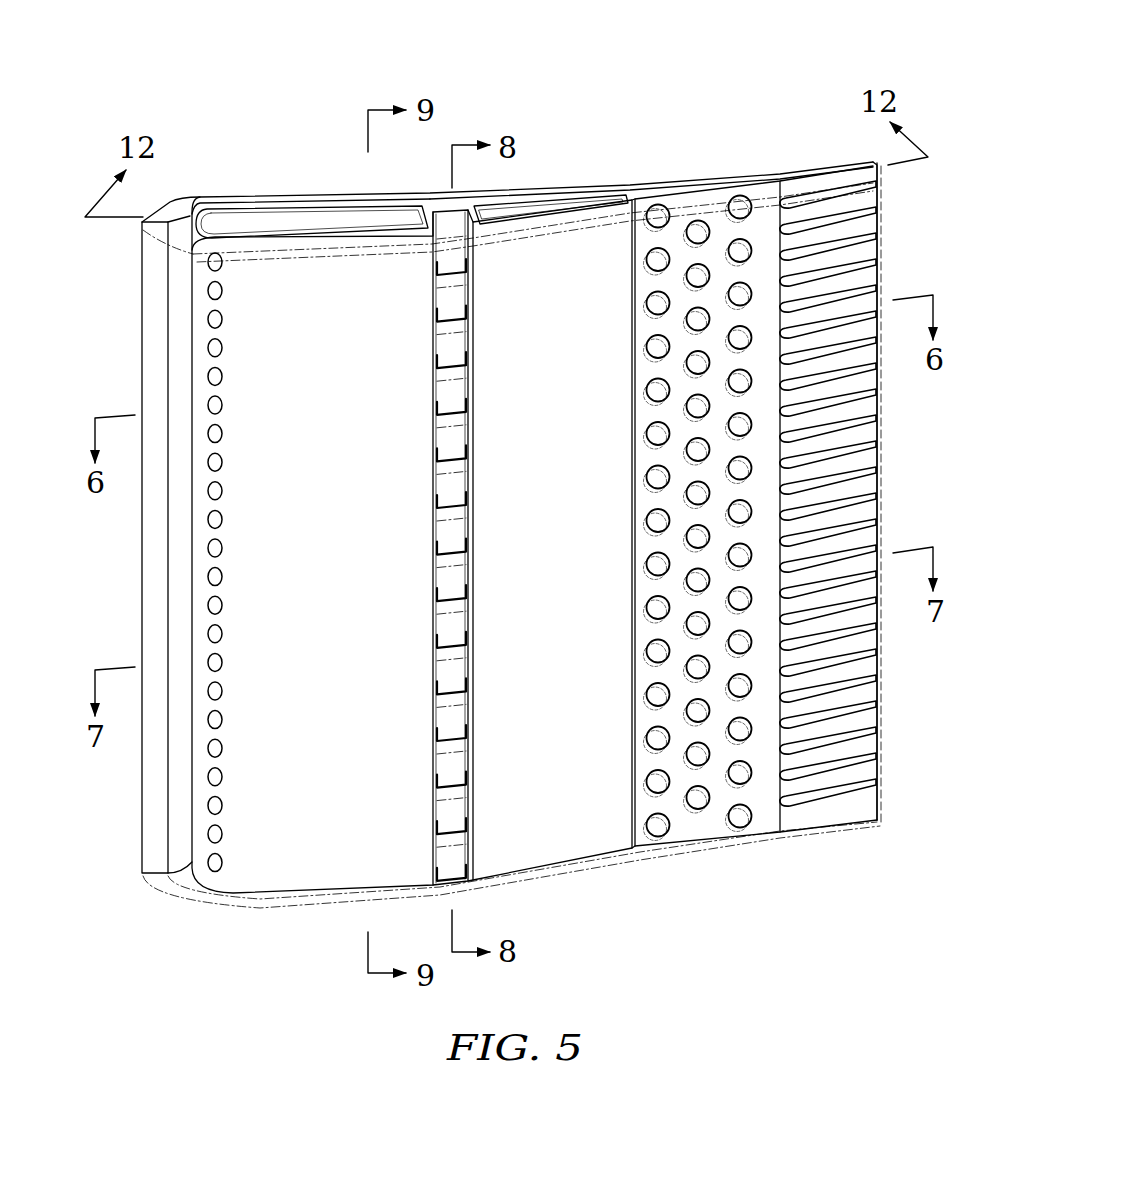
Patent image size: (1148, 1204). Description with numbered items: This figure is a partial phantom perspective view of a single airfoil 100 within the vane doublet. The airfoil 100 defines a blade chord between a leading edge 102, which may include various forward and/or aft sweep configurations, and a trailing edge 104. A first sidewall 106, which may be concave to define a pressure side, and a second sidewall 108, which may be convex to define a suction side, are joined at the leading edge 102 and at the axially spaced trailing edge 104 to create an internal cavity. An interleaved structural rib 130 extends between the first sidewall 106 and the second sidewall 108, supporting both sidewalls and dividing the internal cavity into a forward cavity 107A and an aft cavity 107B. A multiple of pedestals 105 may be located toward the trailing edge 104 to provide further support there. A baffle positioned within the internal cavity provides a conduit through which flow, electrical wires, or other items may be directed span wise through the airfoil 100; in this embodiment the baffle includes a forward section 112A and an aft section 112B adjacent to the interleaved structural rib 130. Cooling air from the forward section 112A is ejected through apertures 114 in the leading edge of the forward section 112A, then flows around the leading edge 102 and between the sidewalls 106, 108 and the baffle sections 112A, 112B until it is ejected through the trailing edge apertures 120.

The airfoil 100 is at (767, 98).
The leading edge 102 is at (142, 567).
The trailing edge 104 is at (877, 437).
The pedestals 105 is at (693, 223).
The first sidewall 106 is at (262, 196).
The forward cavity 107A is at (205, 210).
The aft cavity 107B is at (537, 205).
The second sidewall 108 is at (563, 243).
The forward section 112A is at (263, 218).
The aft section 112B is at (503, 214).
The apertures 114 is at (208, 297).
The trailing edge apertures 120 is at (853, 247).
The interleaved structural rib 130 is at (443, 212).